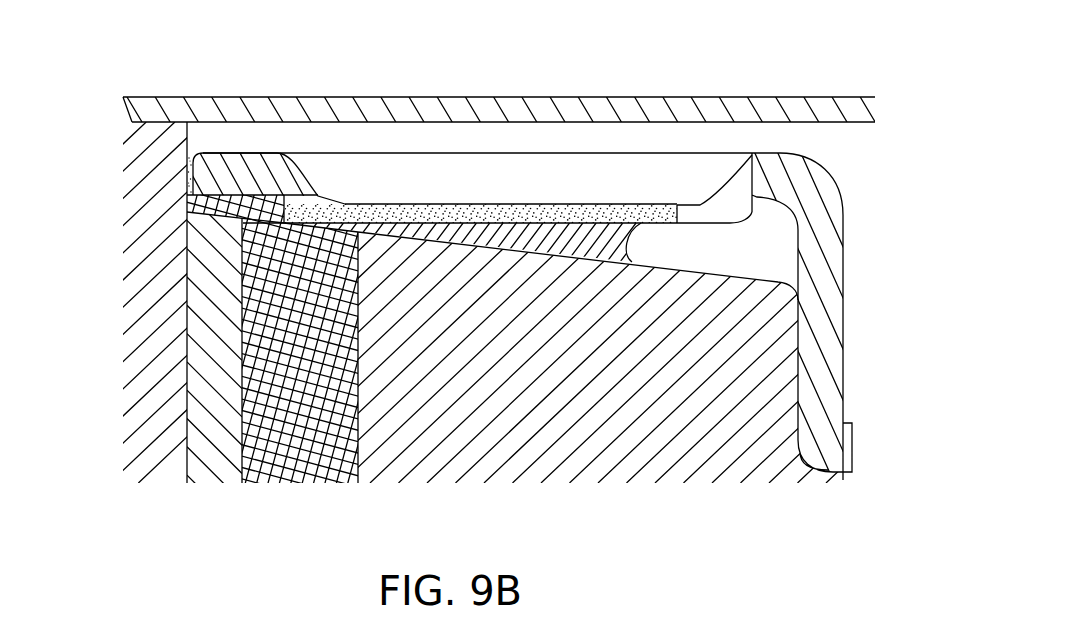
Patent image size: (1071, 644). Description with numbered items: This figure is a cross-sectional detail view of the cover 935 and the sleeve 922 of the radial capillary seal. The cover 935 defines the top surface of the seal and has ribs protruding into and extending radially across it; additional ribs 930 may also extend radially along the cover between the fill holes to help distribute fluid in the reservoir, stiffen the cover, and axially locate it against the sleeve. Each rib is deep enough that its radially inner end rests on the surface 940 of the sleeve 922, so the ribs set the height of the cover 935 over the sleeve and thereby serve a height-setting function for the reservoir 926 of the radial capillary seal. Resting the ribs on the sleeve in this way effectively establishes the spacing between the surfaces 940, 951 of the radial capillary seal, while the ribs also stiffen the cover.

The sleeve 922 is at (752, 437).
The reservoir 926 is at (563, 237).
The additional ribs 930 is at (245, 167).
The cover 935 is at (295, 273).
The surface of sleeve 940 is at (460, 243).
The surface of radial capillary seal 951 is at (380, 210).